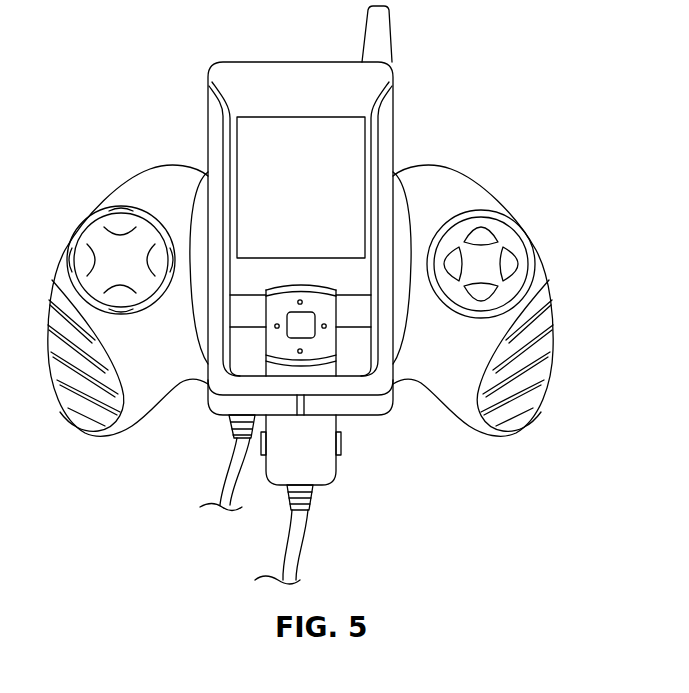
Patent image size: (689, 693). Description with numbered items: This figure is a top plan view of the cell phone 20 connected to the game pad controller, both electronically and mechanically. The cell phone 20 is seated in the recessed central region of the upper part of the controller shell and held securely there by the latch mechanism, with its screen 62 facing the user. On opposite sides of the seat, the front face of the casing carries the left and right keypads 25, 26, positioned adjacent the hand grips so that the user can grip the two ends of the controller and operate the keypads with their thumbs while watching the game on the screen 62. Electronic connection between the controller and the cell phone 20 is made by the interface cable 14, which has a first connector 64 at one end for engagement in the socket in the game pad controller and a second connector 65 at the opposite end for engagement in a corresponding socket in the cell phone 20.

The interface cable 14 is at (298, 537).
The cell phone 20 is at (230, 62).
The left keypad 25 is at (90, 236).
The right keypad 26 is at (497, 248).
The screen 62 is at (337, 172).
The first connector 64 is at (229, 428).
The second connector 65 is at (313, 497).